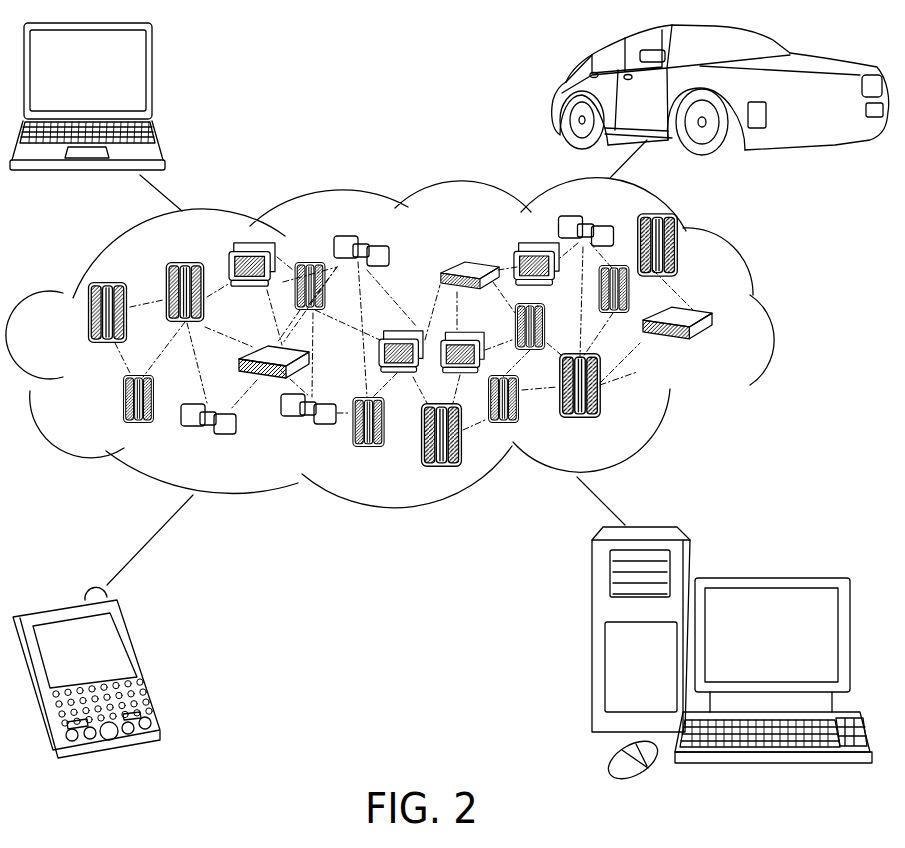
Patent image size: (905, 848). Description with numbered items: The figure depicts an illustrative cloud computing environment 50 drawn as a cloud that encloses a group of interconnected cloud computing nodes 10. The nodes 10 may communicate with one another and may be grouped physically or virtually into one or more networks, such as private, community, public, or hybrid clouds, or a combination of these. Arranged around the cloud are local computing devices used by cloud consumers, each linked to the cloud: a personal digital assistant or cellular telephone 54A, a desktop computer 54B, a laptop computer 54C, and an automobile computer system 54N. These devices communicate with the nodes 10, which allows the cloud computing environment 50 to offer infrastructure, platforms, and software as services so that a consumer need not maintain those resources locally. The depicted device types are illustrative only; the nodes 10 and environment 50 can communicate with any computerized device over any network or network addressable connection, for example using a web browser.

The cloud computing node 10 is at (716, 347).
The cloud computing environment 50 is at (773, 317).
The personal digital assistant or cellular telephone 54A is at (143, 663).
The desktop computer 54B is at (770, 578).
The laptop computer 54C is at (152, 78).
The automobile computer system 54N is at (560, 90).